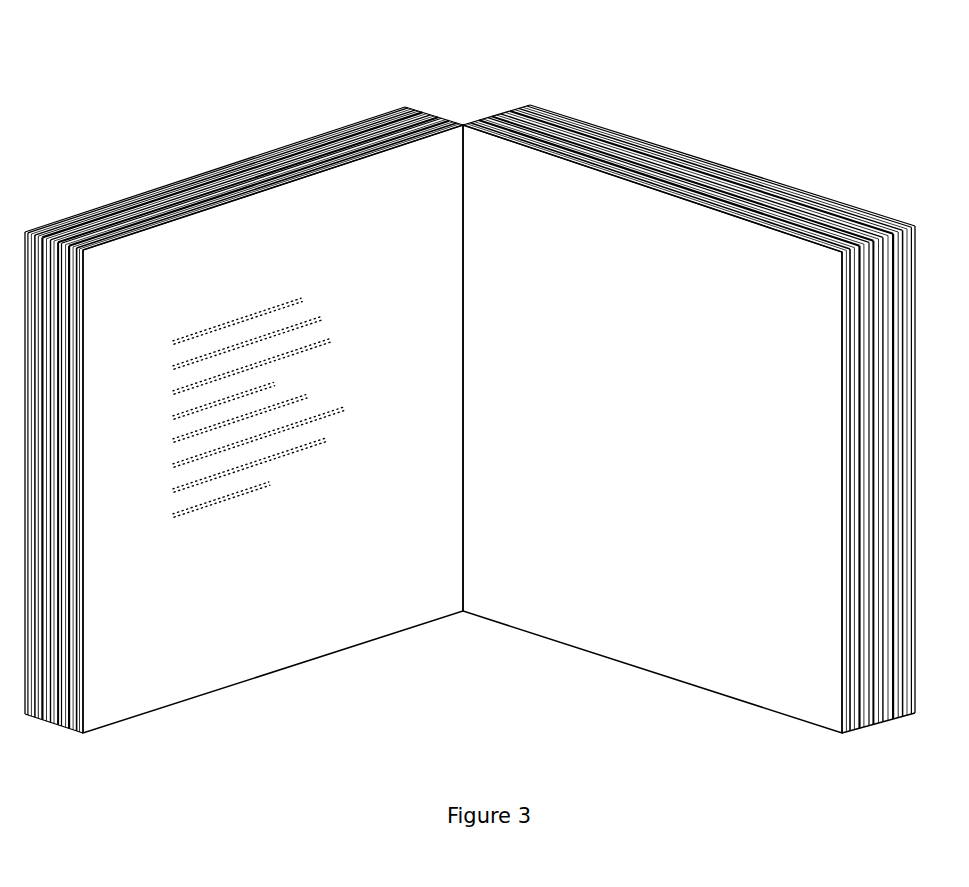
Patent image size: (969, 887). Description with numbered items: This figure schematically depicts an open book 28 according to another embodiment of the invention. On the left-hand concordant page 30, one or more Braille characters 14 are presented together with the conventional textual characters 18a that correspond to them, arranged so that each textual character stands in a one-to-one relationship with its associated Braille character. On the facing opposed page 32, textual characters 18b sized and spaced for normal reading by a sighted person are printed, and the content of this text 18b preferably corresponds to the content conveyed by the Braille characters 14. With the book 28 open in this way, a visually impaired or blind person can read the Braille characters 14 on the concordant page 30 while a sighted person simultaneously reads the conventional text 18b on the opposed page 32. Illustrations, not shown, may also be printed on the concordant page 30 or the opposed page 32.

The book 28 is at (328, 117).
The concordant page 30 is at (173, 680).
The opposed page 32 is at (757, 681).
The Braille characters 14 is at (162, 347).
The conventional textual characters 18a is at (272, 293).
The textual characters 18b is at (610, 265).